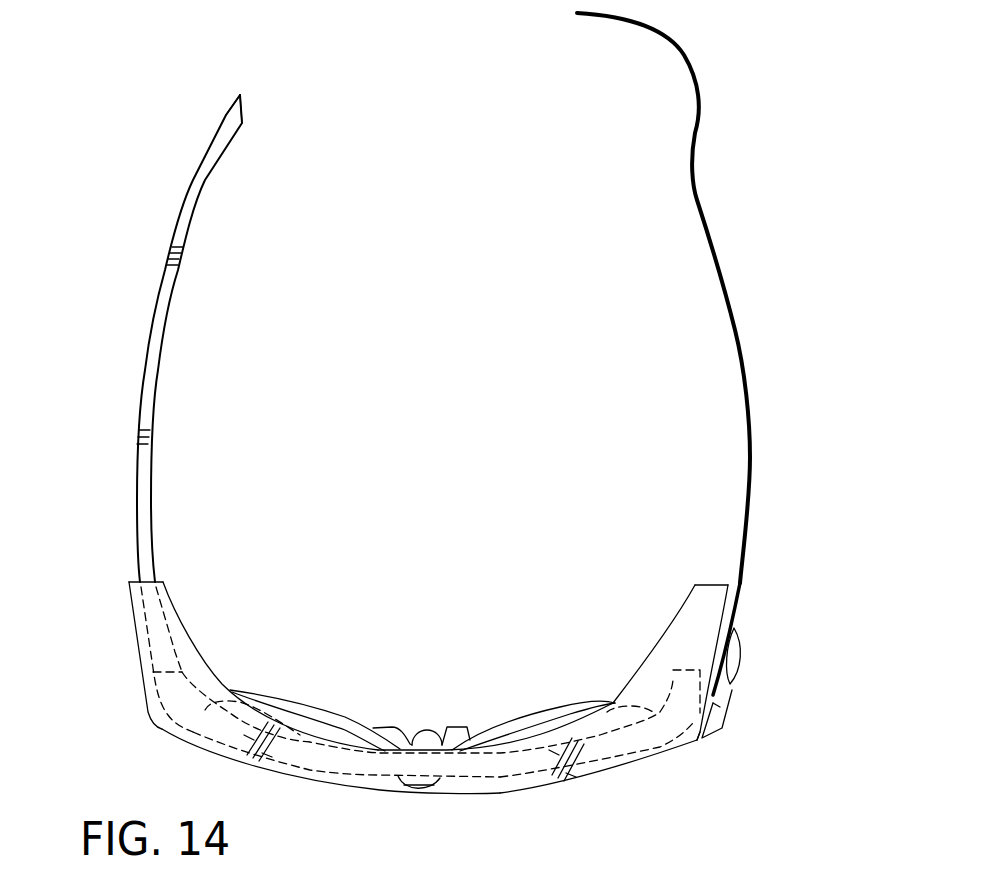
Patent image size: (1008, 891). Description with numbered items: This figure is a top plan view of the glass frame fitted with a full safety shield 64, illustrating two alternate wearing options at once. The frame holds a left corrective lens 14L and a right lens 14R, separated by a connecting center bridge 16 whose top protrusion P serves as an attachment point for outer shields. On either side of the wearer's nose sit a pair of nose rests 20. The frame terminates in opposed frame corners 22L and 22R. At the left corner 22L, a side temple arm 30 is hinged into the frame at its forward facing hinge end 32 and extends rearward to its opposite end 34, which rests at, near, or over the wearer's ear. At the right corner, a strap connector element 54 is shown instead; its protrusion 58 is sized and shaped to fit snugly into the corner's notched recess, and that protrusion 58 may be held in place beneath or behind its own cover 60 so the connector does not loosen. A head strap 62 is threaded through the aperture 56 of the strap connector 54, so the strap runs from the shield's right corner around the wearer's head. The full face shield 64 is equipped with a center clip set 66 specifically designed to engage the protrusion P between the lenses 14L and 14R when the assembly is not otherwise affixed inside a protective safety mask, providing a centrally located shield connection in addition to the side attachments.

The left corrective lens 14L is at (303, 727).
The right lens 14R is at (542, 733).
The connecting center bridge 16 is at (433, 763).
The nose rests 20 is at (393, 727).
The left frame corner 22L is at (193, 716).
The right frame corner 22R is at (673, 717).
The side temple arm 30 is at (163, 306).
The hinge end 32 is at (182, 653).
The ear end 34 is at (220, 150).
The strap connector element 54 is at (733, 688).
The aperture 56 is at (738, 673).
The protrusion 58 is at (717, 727).
The cover 60 is at (688, 740).
The head strap 62 is at (749, 407).
The full face shield 64 is at (687, 633).
The center clip set 66 is at (427, 730).
The top protrusion P is at (430, 790).